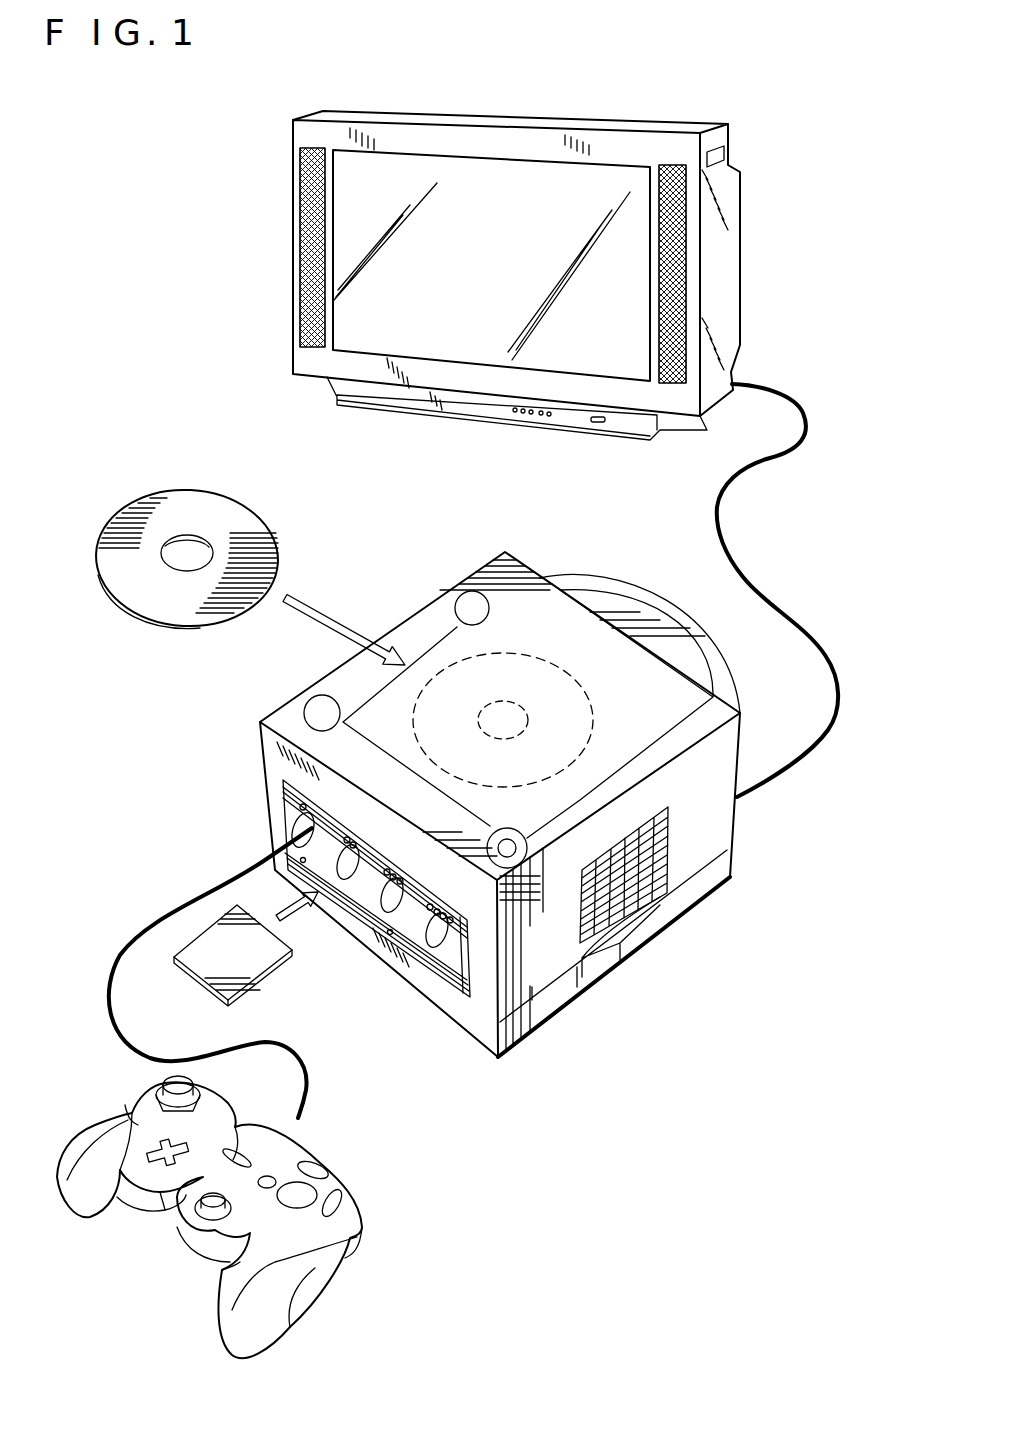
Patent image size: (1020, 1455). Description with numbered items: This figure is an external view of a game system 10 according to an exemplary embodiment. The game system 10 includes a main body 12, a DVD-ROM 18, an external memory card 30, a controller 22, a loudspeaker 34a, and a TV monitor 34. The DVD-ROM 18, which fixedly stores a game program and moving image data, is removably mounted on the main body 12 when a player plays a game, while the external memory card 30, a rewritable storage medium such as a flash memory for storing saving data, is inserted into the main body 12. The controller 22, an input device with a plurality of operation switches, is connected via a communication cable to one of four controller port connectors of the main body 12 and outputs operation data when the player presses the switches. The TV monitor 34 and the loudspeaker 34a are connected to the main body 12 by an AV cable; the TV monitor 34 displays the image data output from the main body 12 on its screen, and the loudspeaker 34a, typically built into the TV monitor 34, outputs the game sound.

The game system 10 is at (163, 395).
The main body 12 is at (510, 562).
The DVD-ROM 18 is at (258, 513).
The controller 22 is at (325, 1148).
The external memory card 30 is at (265, 984).
The TV monitor 34 is at (742, 210).
The loudspeaker 34a is at (316, 150).